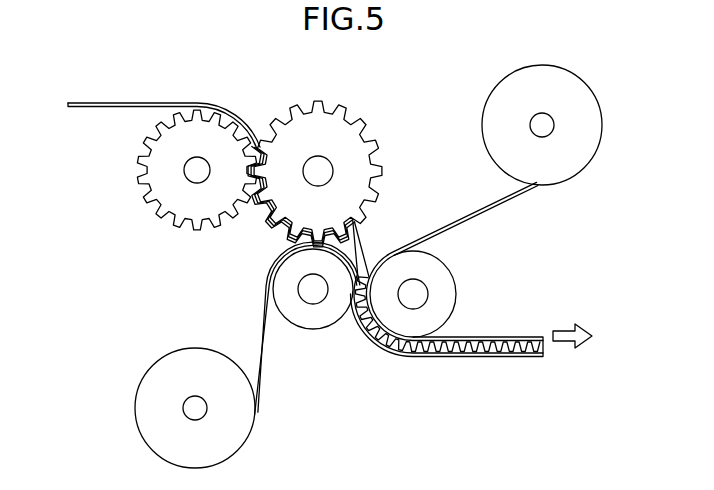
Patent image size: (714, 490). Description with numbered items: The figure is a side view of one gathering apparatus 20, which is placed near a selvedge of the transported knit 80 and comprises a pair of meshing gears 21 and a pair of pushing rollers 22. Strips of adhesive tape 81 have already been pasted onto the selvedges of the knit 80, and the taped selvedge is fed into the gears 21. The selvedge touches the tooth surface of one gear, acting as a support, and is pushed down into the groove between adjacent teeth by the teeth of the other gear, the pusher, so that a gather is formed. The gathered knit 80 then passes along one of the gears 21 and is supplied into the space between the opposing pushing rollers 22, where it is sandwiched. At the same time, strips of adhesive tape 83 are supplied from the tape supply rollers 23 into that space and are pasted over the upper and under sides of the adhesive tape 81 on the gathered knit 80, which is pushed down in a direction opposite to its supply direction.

The gathering apparatus 20 is at (92, 384).
The gears 21 is at (163, 200).
The pushing rollers 22 is at (317, 323).
The tape supply rollers 23 is at (590, 105).
The knit 80 is at (113, 135).
The strips of adhesive tape 81 is at (124, 102).
The strips of adhesive tape 83 is at (500, 205).